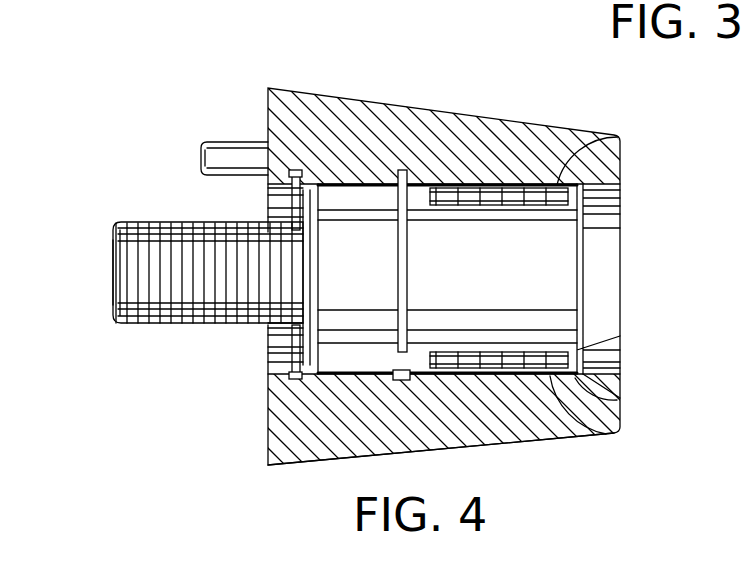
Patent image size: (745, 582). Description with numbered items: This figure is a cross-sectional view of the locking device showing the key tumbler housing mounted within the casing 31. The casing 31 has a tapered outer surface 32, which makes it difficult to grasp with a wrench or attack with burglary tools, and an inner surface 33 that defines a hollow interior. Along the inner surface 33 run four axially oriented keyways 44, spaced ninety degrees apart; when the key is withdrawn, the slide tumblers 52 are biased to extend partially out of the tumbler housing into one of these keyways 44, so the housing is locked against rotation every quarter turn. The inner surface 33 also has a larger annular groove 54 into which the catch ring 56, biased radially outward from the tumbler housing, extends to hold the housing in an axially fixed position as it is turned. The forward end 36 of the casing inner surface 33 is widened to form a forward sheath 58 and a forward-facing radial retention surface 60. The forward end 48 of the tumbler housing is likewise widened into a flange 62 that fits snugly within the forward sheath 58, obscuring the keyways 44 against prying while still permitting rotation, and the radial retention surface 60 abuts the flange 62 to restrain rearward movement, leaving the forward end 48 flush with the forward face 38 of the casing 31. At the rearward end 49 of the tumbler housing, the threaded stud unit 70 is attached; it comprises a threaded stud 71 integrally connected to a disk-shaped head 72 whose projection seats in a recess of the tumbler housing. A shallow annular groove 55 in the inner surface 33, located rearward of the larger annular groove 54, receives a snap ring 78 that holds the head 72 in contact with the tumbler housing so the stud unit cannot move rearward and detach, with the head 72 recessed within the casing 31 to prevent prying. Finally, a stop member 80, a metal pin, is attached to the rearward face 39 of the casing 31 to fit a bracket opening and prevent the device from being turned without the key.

The casing 31 is at (372, 236).
The outer surface 32 is at (312, 90).
The inner surface 33 is at (272, 196).
The forward end 36 is at (661, 389).
The forward face 38 is at (582, 167).
The rearward face 39 is at (268, 465).
The keyways 44 is at (579, 153).
The forward end 48 is at (619, 182).
The rearward end 49 is at (282, 345).
The slide tumblers 52 is at (556, 188).
The larger annular groove 54 is at (396, 172).
The shallow annular groove 55 is at (293, 376).
The catch ring 56 is at (432, 187).
The forward sheath 58 is at (620, 410).
The radial retention surface 60 is at (585, 357).
The flange 62 is at (589, 323).
The threaded stud unit 70 is at (147, 330).
The threaded stud 71 is at (105, 248).
The head 72 is at (270, 201).
The snap ring 78 is at (267, 328).
The stop member 80 is at (227, 142).